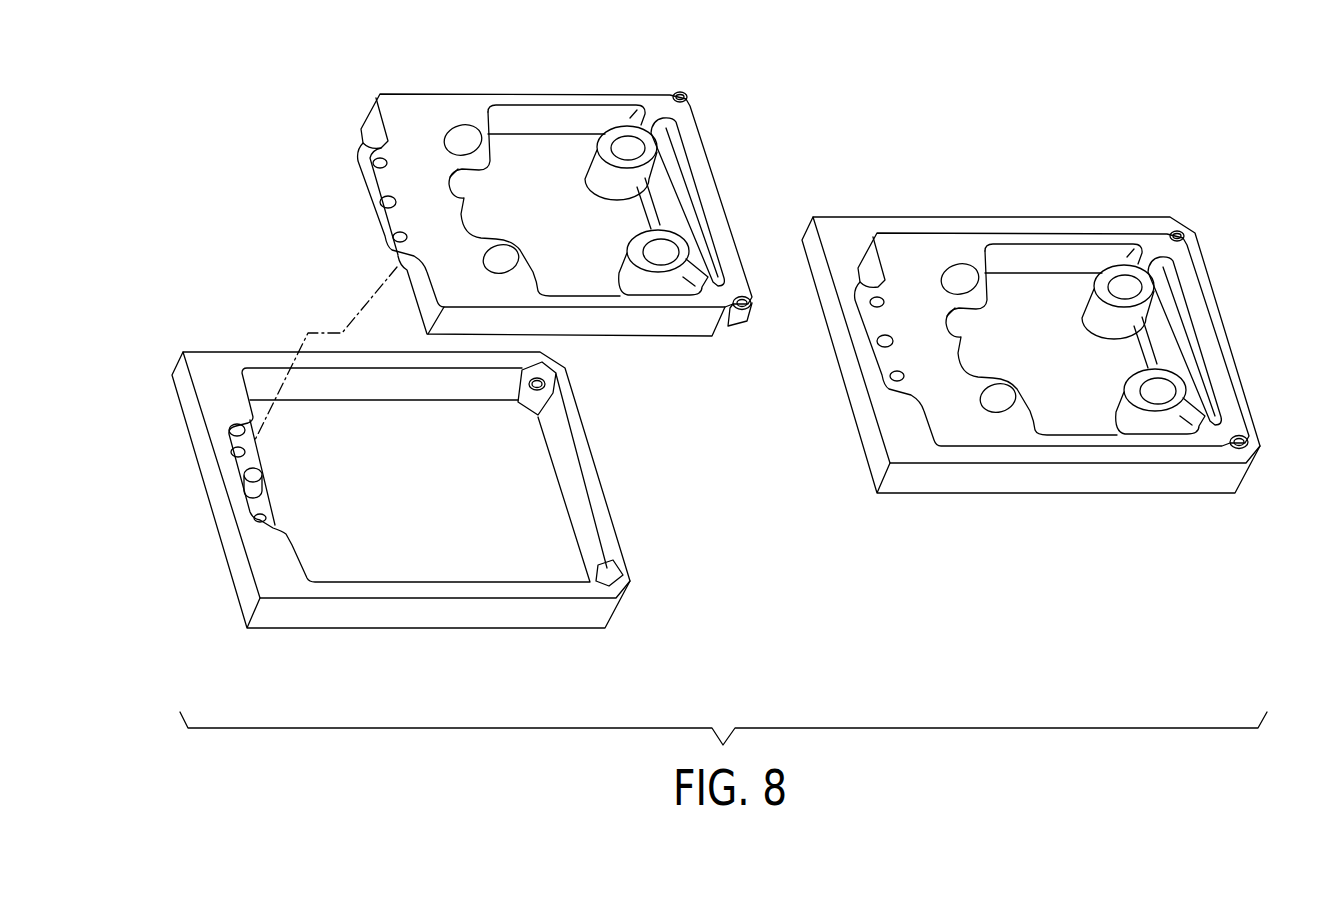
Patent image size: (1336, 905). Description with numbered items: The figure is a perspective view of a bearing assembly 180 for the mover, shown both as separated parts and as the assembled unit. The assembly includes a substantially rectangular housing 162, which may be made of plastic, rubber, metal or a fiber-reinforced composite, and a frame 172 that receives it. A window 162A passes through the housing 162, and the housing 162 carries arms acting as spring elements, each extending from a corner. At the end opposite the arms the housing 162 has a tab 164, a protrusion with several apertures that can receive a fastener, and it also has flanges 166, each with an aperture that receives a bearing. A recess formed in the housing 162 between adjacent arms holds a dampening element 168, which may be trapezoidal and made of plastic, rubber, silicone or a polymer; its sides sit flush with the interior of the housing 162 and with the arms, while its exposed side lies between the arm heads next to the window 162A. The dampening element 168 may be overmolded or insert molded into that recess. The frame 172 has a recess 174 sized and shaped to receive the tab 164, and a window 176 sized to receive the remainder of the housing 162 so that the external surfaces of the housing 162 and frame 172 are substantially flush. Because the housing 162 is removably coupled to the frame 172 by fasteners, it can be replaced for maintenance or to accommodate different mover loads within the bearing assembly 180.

The housing 162 is at (532, 186).
The window 162A is at (588, 231).
The tab 164 is at (366, 207).
The flange 166 is at (521, 168).
The dampening element 168 is at (673, 197).
The frame 172 is at (382, 490).
The recess 174 is at (268, 503).
The window 176 is at (500, 486).
The bearing assembly 180 is at (1069, 187).